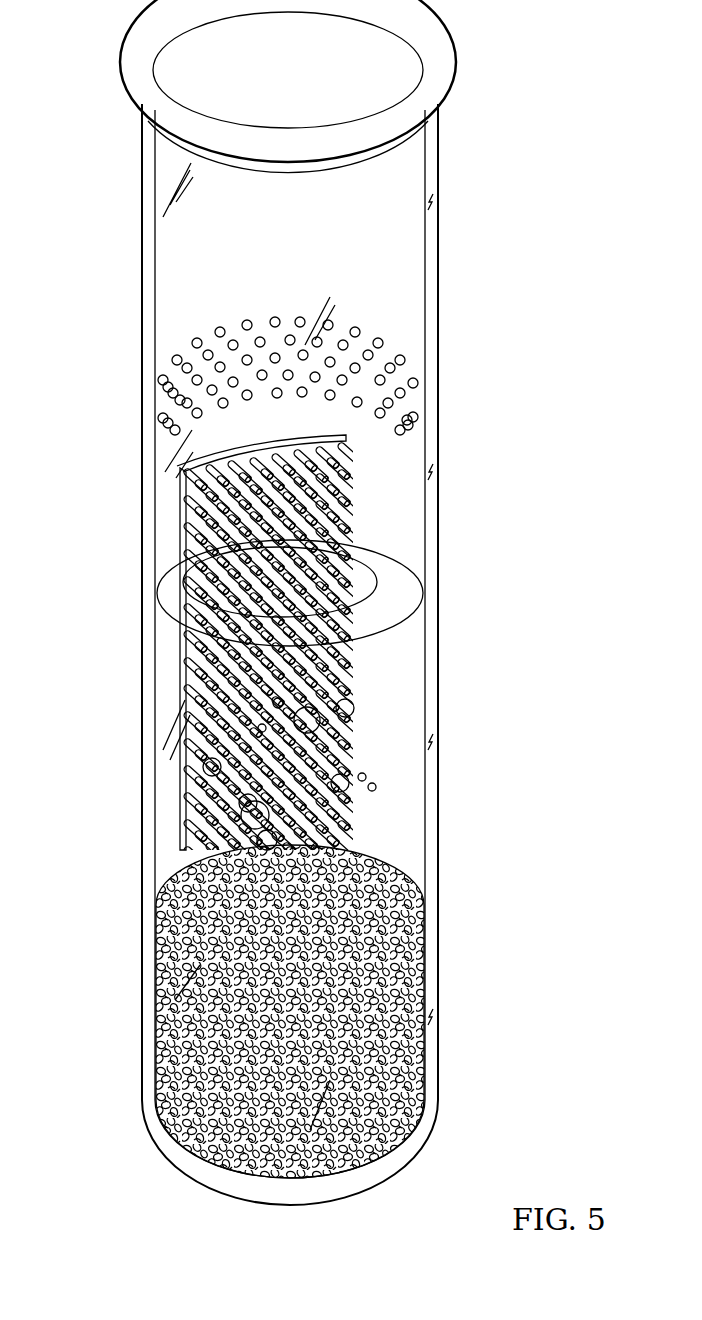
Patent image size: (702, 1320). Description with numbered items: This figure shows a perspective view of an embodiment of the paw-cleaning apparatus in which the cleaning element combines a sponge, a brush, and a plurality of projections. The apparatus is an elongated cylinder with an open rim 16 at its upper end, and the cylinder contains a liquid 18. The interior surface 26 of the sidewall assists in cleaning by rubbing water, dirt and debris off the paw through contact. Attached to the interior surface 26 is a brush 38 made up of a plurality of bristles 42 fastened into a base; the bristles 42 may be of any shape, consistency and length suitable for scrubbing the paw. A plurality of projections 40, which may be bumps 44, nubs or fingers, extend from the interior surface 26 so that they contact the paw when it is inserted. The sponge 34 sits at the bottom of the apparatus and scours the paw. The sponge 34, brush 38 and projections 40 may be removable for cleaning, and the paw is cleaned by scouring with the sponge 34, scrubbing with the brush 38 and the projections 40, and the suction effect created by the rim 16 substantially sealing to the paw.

The open rim 16 is at (150, 70).
The interior surface 26 is at (430, 515).
The liquid 18 is at (283, 657).
The bristles 42 is at (183, 777).
The brush 38 is at (305, 697).
The plurality of projections 40 is at (255, 385).
The bumps 44 is at (362, 376).
The sponge 34 is at (268, 1060).